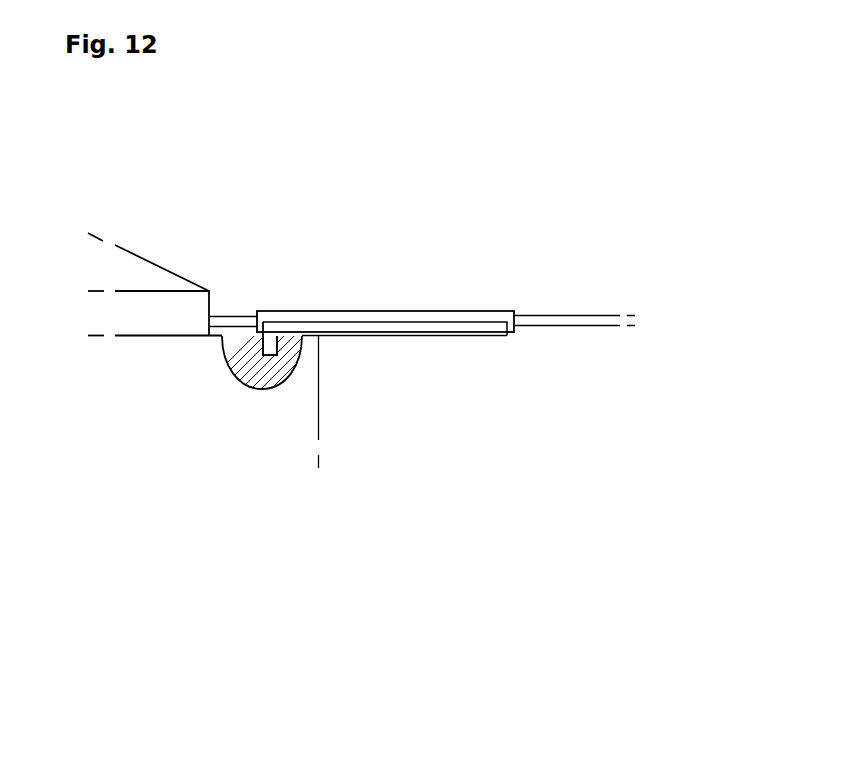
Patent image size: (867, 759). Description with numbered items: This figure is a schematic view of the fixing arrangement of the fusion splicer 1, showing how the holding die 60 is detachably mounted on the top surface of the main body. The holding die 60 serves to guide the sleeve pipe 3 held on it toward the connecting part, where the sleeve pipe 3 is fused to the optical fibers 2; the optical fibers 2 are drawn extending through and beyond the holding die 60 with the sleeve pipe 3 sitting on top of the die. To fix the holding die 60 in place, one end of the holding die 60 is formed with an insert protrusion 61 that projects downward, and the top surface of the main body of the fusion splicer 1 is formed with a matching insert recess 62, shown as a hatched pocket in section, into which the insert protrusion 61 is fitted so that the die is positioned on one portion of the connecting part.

The fusion splicer 1 is at (278, 422).
The optical fibers 2 is at (565, 318).
The sleeve pipe 3 is at (490, 315).
The holding die 60 is at (422, 293).
The insert protrusion 61 is at (277, 352).
The insert recess 62 is at (270, 345).